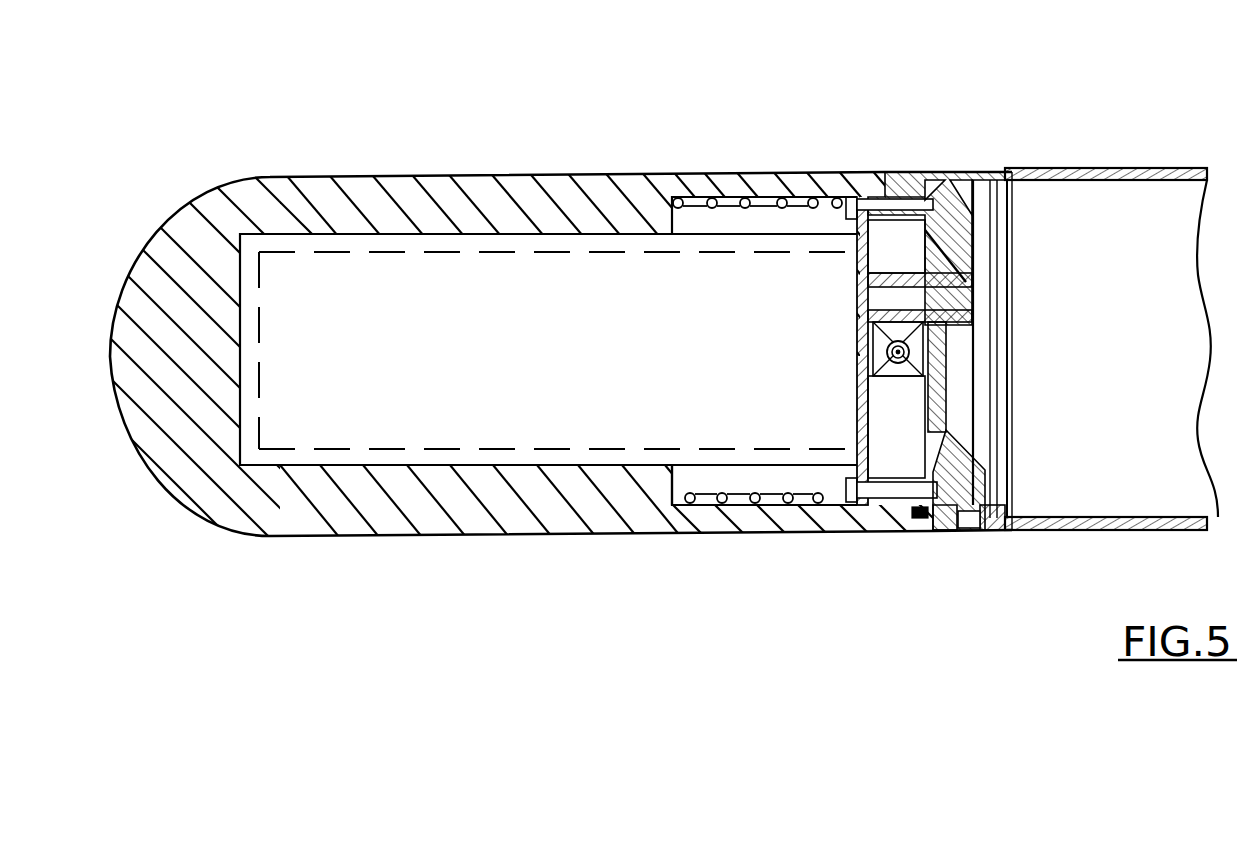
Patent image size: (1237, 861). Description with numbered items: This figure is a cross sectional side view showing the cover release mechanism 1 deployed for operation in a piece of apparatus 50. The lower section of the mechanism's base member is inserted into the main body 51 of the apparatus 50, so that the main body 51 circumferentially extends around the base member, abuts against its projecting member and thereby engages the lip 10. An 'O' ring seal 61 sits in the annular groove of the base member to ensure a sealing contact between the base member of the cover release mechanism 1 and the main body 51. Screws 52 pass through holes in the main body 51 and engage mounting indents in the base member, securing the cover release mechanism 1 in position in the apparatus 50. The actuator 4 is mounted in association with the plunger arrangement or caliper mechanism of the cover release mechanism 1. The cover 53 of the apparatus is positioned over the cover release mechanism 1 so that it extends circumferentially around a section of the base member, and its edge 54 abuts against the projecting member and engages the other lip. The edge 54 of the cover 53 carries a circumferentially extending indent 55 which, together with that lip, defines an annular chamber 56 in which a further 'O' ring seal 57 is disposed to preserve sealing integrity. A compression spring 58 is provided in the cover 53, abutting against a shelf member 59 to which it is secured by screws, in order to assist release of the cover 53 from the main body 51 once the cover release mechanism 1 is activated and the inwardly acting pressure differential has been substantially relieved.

The cover release mechanism 1 is at (960, 373).
The actuator 4 is at (860, 351).
The lip section 10 is at (972, 172).
The apparatus 50 is at (1057, 143).
The main body 51 is at (1140, 168).
The screws 52 is at (975, 533).
The cover 53 is at (395, 518).
The edge 54 is at (930, 172).
The circumferentially extending indent 55 is at (903, 172).
The annular chamber 56 is at (920, 533).
The 'O' ring seal 57 is at (893, 519).
The compression spring 58 is at (713, 210).
The shelf member 59 is at (672, 478).
The 'O' ring seal 61 is at (1008, 185).